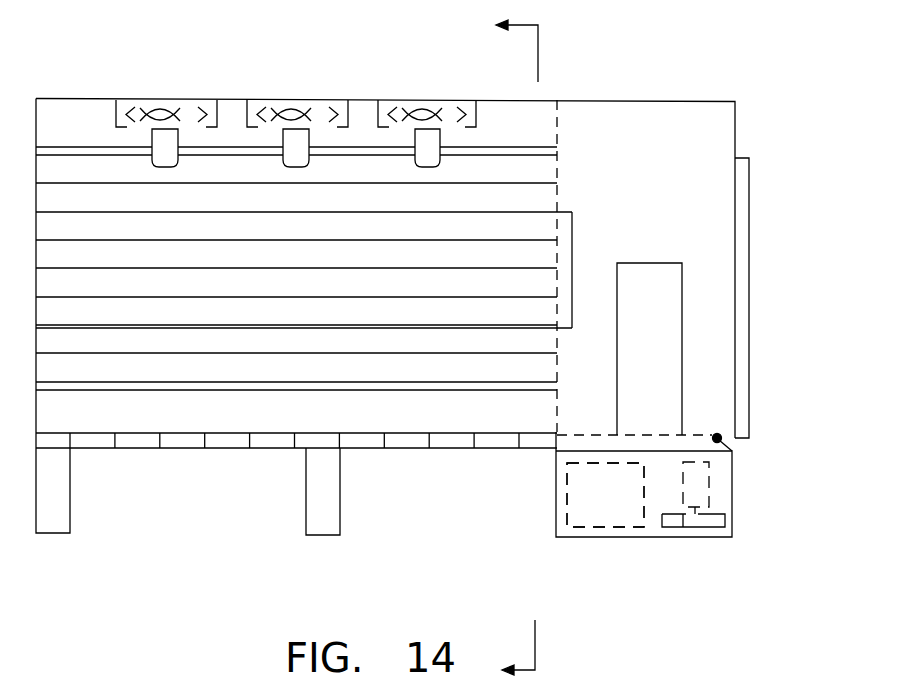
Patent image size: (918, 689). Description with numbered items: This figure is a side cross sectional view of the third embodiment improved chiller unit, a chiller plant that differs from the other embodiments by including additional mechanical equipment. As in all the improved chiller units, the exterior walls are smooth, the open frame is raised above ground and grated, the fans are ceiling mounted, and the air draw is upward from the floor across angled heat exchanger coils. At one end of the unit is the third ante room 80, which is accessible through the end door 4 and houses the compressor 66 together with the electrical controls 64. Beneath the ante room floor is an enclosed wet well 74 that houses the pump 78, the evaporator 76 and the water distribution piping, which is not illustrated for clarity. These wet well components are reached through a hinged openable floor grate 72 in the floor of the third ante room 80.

The end door 4 is at (740, 172).
The electrical controls 64 is at (572, 213).
The compressor 66 is at (662, 328).
The hinged openable floor grate 72 is at (573, 437).
The enclosed wet well 74 is at (603, 537).
The evaporator 76 is at (623, 515).
The pump 78 is at (713, 522).
The third ante room 80 is at (720, 225).